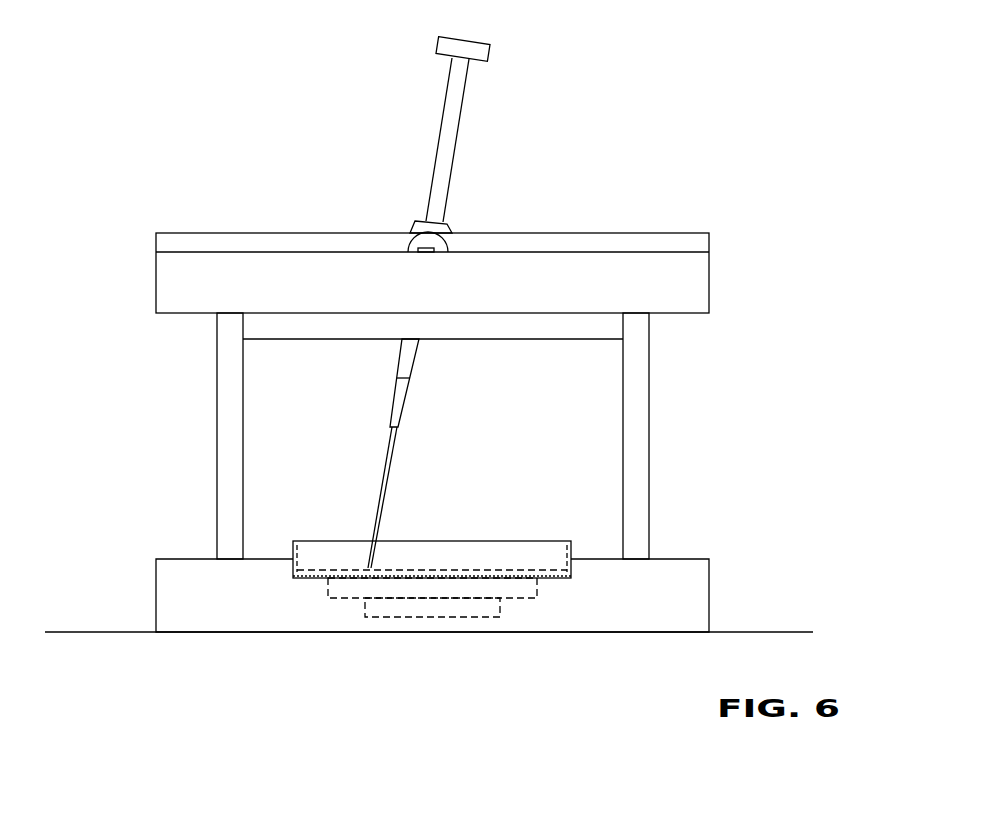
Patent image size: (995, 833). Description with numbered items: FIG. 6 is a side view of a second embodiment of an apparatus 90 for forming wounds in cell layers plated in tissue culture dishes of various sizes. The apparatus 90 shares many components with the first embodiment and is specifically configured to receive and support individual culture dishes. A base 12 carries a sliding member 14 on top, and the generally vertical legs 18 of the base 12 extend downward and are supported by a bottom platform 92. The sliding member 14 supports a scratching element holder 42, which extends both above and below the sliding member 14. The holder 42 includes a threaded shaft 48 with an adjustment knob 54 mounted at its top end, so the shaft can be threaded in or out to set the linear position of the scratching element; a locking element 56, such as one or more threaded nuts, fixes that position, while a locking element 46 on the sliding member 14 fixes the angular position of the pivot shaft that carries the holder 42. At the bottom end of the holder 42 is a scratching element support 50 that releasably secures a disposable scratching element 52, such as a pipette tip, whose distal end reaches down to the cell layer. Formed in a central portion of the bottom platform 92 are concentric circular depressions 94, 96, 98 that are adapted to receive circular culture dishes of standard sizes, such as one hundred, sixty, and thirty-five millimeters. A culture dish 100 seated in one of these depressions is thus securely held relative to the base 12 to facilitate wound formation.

The base 12 is at (122, 286).
The sliding member 14 is at (738, 216).
The legs 18 is at (226, 440).
The scratching element holder 42 is at (380, 138).
The locking element 46 is at (428, 250).
The threaded shaft 48 is at (450, 141).
The scratching element support 50 is at (446, 393).
The scratching element 52 is at (390, 467).
The adjustment knob 54 is at (484, 50).
The locking element 56 is at (413, 223).
The apparatus 90 is at (830, 132).
The bottom platform 92 is at (737, 556).
The circular depression 94 is at (293, 577).
The circular depression 96 is at (328, 592).
The circular depression 98 is at (365, 612).
The dish 100 is at (488, 541).